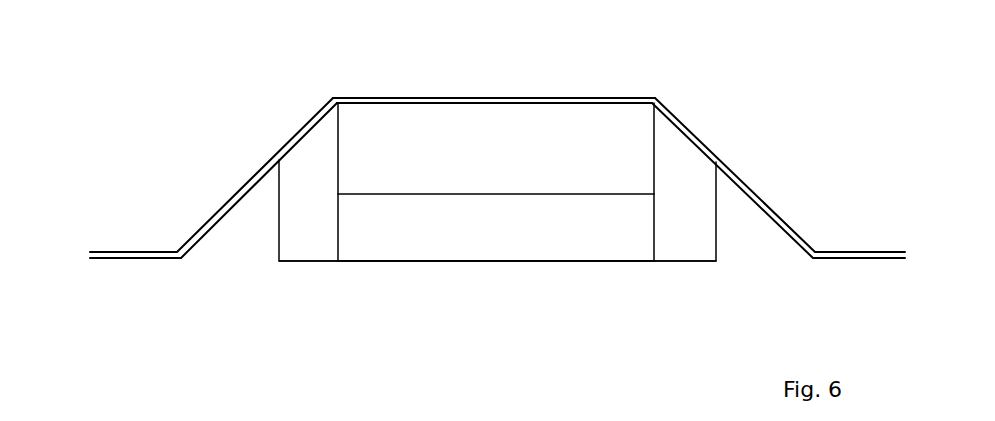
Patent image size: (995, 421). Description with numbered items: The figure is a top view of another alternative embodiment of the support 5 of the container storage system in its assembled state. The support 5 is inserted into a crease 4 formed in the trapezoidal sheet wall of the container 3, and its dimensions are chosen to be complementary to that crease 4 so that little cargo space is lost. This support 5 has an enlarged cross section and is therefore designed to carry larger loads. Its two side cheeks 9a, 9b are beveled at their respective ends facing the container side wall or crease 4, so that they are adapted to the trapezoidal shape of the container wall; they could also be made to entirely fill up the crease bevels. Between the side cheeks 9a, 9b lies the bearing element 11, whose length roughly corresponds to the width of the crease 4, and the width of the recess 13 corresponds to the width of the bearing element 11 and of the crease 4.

The container 3 is at (232, 135).
The crease 4 is at (628, 102).
The support 5 is at (672, 318).
The side cheek 9a is at (680, 248).
The side cheek 9b is at (318, 248).
The bearing element 11 is at (428, 242).
The recess 13 is at (495, 292).